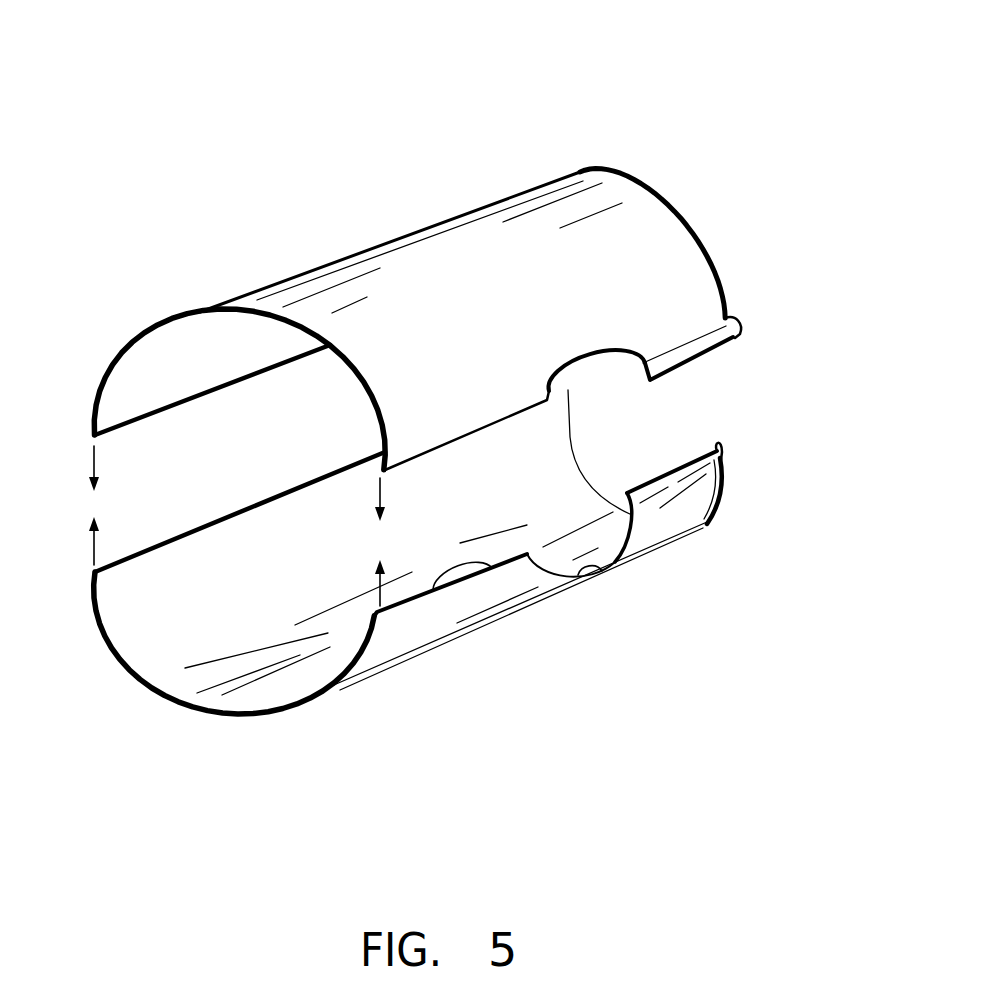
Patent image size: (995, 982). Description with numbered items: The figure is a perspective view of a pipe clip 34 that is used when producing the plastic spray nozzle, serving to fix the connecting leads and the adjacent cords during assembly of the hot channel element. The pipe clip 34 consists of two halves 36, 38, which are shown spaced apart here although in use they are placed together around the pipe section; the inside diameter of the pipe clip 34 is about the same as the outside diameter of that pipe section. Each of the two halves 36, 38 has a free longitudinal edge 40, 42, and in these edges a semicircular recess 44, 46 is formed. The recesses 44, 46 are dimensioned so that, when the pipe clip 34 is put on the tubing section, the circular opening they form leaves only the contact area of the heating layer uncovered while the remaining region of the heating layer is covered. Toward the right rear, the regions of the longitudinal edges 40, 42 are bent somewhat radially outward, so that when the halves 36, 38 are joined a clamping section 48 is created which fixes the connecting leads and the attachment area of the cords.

The pipe clip 34 is at (312, 138).
The half of the pipe clip 36 is at (608, 190).
The half of the pipe clip 38 is at (197, 682).
The free longitudinal edge 40 is at (427, 455).
The free longitudinal edge 42 is at (486, 569).
The semicircular recess 44 is at (603, 357).
The semicircular recess 46 is at (601, 569).
The clamping section 48 is at (735, 338).